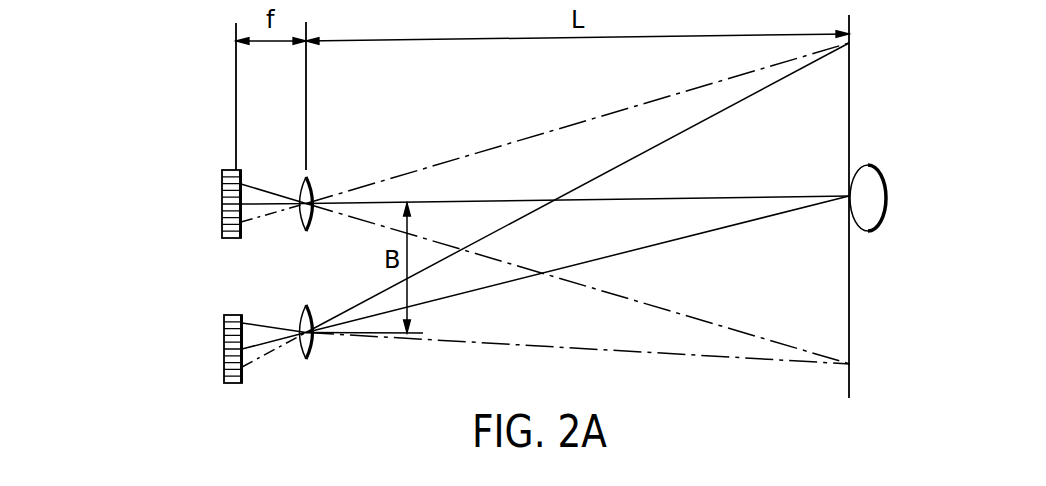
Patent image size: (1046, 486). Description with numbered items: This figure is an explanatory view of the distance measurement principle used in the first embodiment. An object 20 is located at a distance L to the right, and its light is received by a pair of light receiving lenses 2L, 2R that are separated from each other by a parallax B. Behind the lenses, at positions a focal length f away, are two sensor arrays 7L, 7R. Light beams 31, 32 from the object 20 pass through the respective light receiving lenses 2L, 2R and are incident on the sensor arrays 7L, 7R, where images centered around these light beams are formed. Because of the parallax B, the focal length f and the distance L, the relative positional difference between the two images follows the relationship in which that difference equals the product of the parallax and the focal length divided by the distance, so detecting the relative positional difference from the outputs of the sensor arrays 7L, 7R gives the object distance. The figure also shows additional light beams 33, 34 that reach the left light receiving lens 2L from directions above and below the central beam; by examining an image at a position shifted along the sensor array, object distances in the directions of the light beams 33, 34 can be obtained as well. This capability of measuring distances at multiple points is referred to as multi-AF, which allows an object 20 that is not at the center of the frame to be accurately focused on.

The sensor array 7L is at (222, 202).
The sensor array 7R is at (224, 347).
The light receiving lens 2L is at (311, 181).
The light receiving lens 2R is at (313, 358).
The object 20 is at (882, 176).
The light beam 31 is at (789, 197).
The light beam 32 is at (790, 211).
The light beam 33 is at (790, 62).
The light beam 34 is at (797, 348).